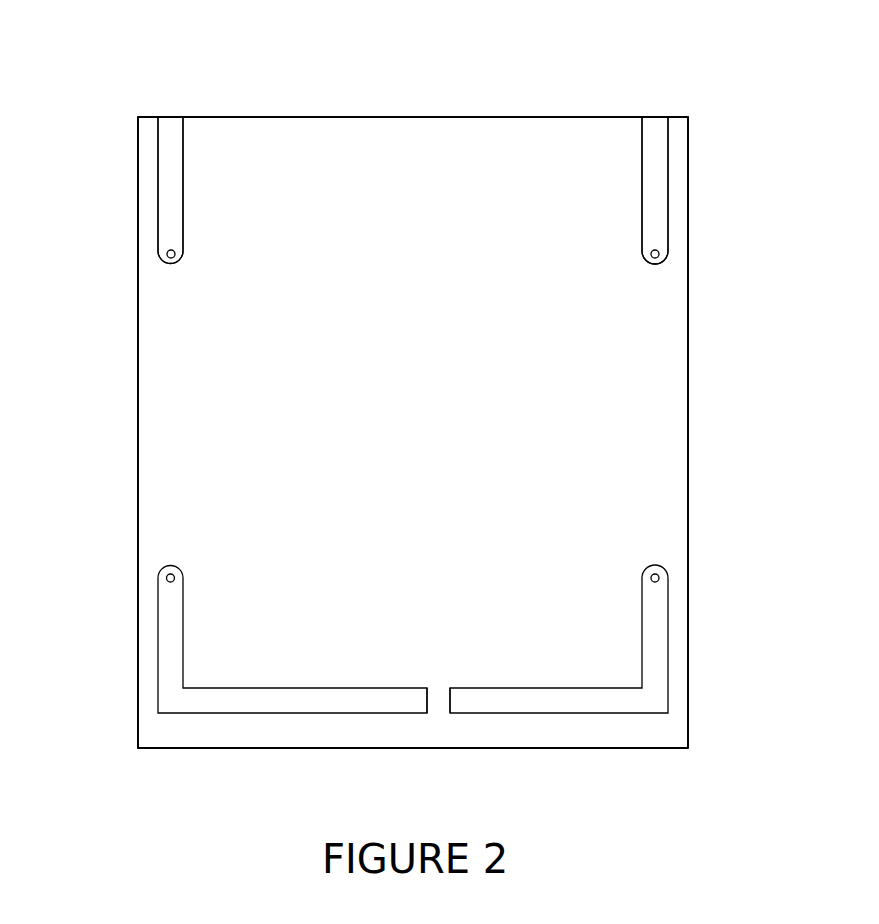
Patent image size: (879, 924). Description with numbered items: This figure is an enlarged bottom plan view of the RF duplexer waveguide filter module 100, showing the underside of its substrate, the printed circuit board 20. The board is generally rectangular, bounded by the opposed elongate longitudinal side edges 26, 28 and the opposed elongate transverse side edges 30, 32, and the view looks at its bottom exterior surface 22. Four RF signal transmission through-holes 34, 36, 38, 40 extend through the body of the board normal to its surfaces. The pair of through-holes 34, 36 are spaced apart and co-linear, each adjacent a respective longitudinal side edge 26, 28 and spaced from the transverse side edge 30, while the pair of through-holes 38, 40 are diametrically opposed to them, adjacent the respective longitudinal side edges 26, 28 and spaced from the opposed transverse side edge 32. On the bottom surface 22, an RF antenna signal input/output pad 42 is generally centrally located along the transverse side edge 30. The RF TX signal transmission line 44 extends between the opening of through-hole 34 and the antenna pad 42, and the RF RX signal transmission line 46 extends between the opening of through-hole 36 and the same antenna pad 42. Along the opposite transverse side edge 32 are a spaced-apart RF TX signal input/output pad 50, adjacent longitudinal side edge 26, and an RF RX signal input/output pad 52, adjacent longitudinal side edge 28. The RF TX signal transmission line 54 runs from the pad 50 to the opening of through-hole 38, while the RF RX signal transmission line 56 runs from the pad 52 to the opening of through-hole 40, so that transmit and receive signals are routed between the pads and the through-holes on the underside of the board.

The RF duplexer waveguide filter module 100 is at (525, 95).
The printed circuit board 20 is at (405, 117).
The bottom exterior surface 22 is at (431, 411).
The longitudinal side edge 26 is at (690, 352).
The longitudinal side edge 28 is at (137, 320).
The transverse side edge 30 is at (265, 748).
The transverse side edge 32 is at (310, 117).
The RF signal transmission through-hole 34 is at (643, 578).
The RF signal transmission through-hole 36 is at (183, 578).
The RF signal transmission through-hole 38 is at (643, 252).
The RF signal transmission through-hole 40 is at (175, 253).
The RF antenna signal input/output pad 42 is at (435, 738).
The RF TX signal transmission line 44 is at (540, 698).
The RF RX signal transmission line 46 is at (258, 702).
The RF TX signal input/output pad 50 is at (653, 127).
The RF RX signal input/output pad 52 is at (167, 142).
The RF TX signal transmission line 54 is at (653, 166).
The RF RX signal transmission line 56 is at (170, 187).